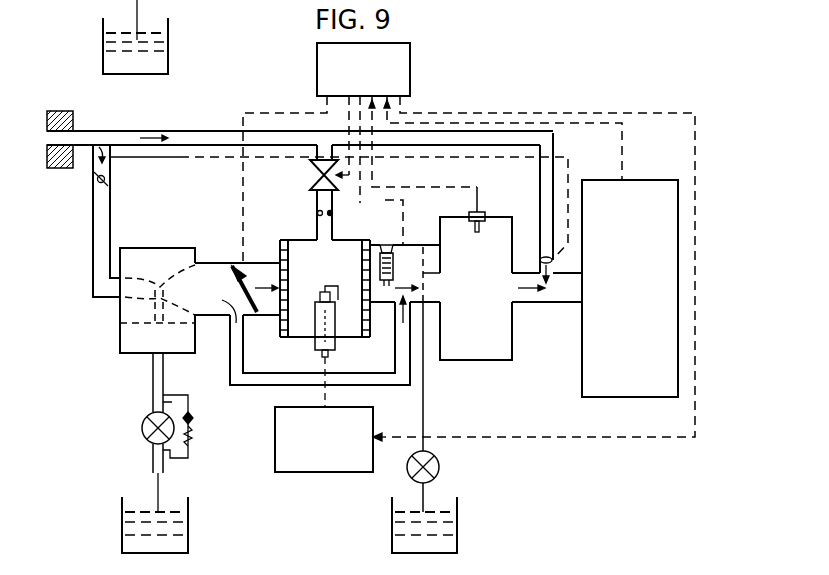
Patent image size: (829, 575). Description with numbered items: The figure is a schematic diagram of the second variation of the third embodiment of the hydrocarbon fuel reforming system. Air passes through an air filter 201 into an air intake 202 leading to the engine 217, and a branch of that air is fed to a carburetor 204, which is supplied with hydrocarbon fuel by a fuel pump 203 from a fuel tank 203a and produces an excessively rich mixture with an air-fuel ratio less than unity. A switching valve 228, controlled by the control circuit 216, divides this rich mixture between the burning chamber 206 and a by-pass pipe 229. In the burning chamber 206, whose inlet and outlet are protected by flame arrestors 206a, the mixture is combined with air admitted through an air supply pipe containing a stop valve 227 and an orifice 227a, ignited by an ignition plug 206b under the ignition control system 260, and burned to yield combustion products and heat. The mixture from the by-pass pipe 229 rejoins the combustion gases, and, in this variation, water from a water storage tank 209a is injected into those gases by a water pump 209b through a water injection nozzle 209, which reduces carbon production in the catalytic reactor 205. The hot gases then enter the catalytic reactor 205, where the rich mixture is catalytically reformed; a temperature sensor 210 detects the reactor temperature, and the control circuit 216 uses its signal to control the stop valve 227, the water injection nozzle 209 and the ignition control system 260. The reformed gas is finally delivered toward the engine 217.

The air filter 201 is at (75, 128).
The air intake 202 is at (172, 131).
The fuel pump 203 is at (142, 428).
The fuel tank 203a is at (103, 33).
The carburetor 204 is at (152, 248).
The catalytic reactor 205 is at (475, 361).
The burning chamber 206 is at (321, 288).
The flame arrestors 206a is at (283, 243).
The ignition plug 206b is at (313, 346).
The water injection nozzle 209 is at (380, 256).
The water storage tank 209a is at (458, 525).
The water pump 209b is at (440, 467).
The temperature sensor 210 is at (480, 208).
The control circuit 216 is at (481, 51).
The engine 217 is at (620, 397).
The stop valve 227 is at (310, 173).
The orifice 227a is at (332, 213).
The switching valve 228 is at (232, 264).
The by-pass pipe 229 is at (235, 387).
The ignition control system 260 is at (308, 473).